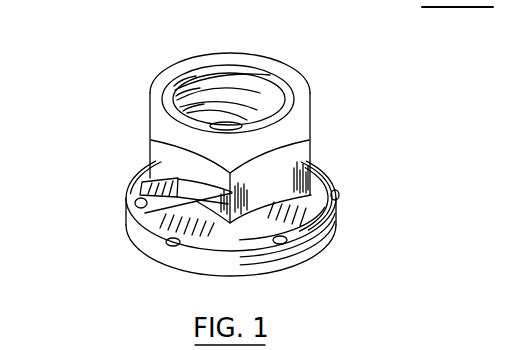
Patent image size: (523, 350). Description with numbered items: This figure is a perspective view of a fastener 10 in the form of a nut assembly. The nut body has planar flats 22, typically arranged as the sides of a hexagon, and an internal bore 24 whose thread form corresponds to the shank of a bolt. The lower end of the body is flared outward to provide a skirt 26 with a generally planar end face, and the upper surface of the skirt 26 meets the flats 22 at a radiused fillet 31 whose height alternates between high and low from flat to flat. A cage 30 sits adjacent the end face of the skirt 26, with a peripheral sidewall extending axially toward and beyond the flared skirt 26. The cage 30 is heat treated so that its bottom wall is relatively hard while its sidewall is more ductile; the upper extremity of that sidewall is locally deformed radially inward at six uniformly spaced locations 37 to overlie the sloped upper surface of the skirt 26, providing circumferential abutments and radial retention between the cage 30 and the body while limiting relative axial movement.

The fastener 10 is at (126, 162).
The internal bore 24 is at (209, 75).
The planar flats 22 is at (131, 239).
The skirt 26 is at (320, 210).
The cage 30 is at (170, 252).
The radiused fillet 31 is at (257, 212).
The uniformly spaced locations of local deformation 37 is at (127, 207).